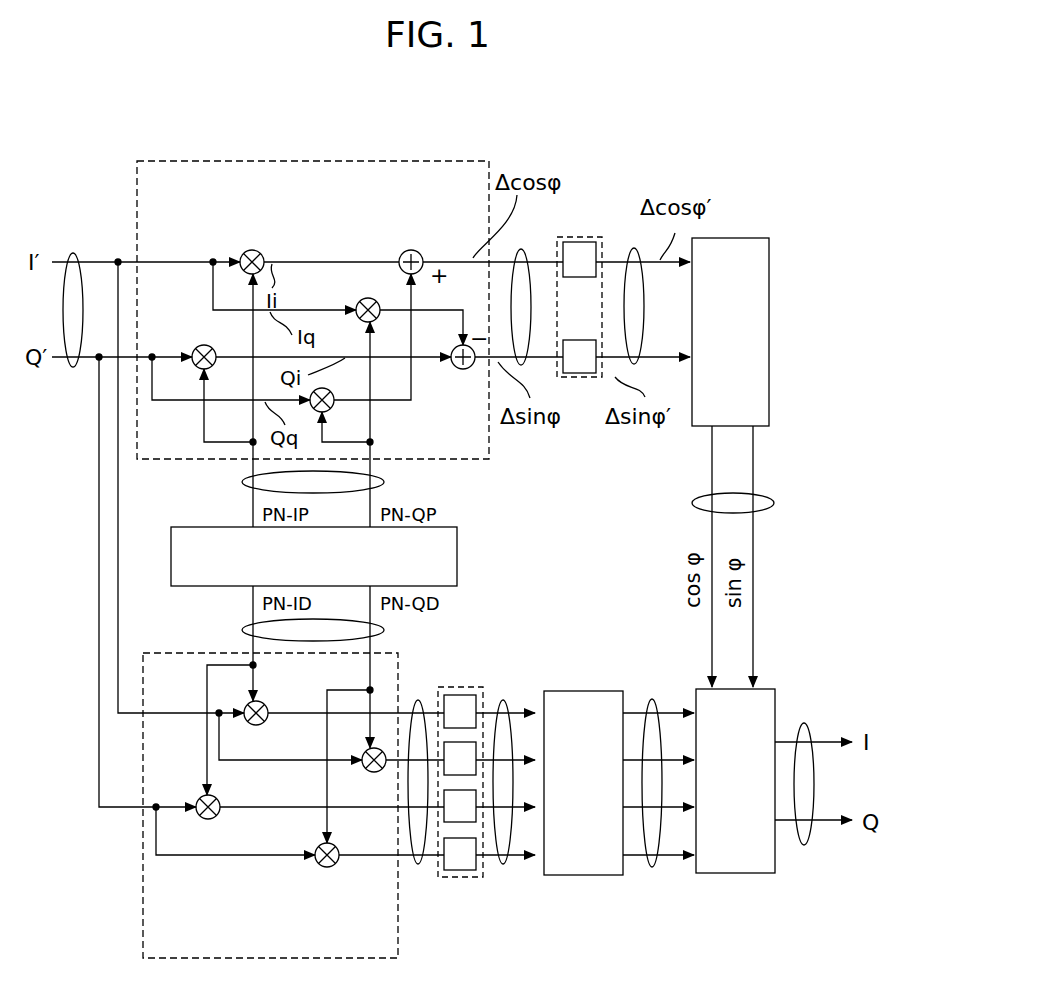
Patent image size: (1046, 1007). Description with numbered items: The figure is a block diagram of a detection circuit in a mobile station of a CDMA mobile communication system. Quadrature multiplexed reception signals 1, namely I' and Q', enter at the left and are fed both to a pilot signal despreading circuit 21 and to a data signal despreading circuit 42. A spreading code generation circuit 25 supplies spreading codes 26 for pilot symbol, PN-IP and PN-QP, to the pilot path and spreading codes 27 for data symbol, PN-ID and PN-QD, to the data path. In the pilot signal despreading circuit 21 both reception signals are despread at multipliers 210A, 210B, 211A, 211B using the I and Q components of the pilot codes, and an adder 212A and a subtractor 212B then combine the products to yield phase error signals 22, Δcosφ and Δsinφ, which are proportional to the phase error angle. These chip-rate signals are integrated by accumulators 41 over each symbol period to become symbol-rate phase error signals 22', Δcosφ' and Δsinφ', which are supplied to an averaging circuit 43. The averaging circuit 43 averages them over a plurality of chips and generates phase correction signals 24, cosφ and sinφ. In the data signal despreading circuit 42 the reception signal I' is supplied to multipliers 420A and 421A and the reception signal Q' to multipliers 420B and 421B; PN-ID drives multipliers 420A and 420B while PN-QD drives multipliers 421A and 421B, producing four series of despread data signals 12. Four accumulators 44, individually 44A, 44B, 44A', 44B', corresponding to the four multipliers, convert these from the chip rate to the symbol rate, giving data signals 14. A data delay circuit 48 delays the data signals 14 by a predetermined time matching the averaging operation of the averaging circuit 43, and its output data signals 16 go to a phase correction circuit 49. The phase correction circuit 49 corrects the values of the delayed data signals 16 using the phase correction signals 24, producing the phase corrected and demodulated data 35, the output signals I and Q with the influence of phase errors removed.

The quadrature multiplexed reception signals 1 is at (75, 368).
The pilot signal despreading circuit 21 is at (380, 160).
The multiplier 210A is at (243, 253).
The multiplier 210B is at (196, 348).
The multiplier 211A is at (358, 301).
The multiplier 211B is at (333, 411).
The adder 212A is at (416, 251).
The subtractor 212B is at (450, 370).
The phase error signals 22 is at (546, 286).
The phase error signals of symbol rate 22' is at (624, 268).
The accumulators 41 is at (578, 378).
The averaging circuit 43 is at (745, 237).
The phase correction signals 24 is at (692, 502).
The spreading code generation circuit 25 is at (457, 552).
The spreading codes for pilot symbol 26 is at (243, 482).
The spreading codes for data symbol 27 is at (243, 630).
The data signal despreading circuit 42 is at (140, 903).
The multiplier 420A is at (268, 703).
The multiplier 420B is at (220, 797).
The multiplier 421A is at (362, 752).
The multiplier 421B is at (315, 846).
The despread data signals 12 is at (415, 700).
The accumulators 44 is at (480, 795).
The accumulator 44A is at (496, 700).
The accumulator 44B is at (444, 859).
The accumulator 44A' is at (521, 711).
The accumulator 44B' is at (522, 884).
The data signals of symbol rate 14 is at (505, 862).
The data delay circuit 48 is at (598, 688).
The delayed data signals 16 is at (652, 868).
The phase correction circuit 49 is at (740, 875).
The phase corrected and demodulated data 35 is at (806, 847).